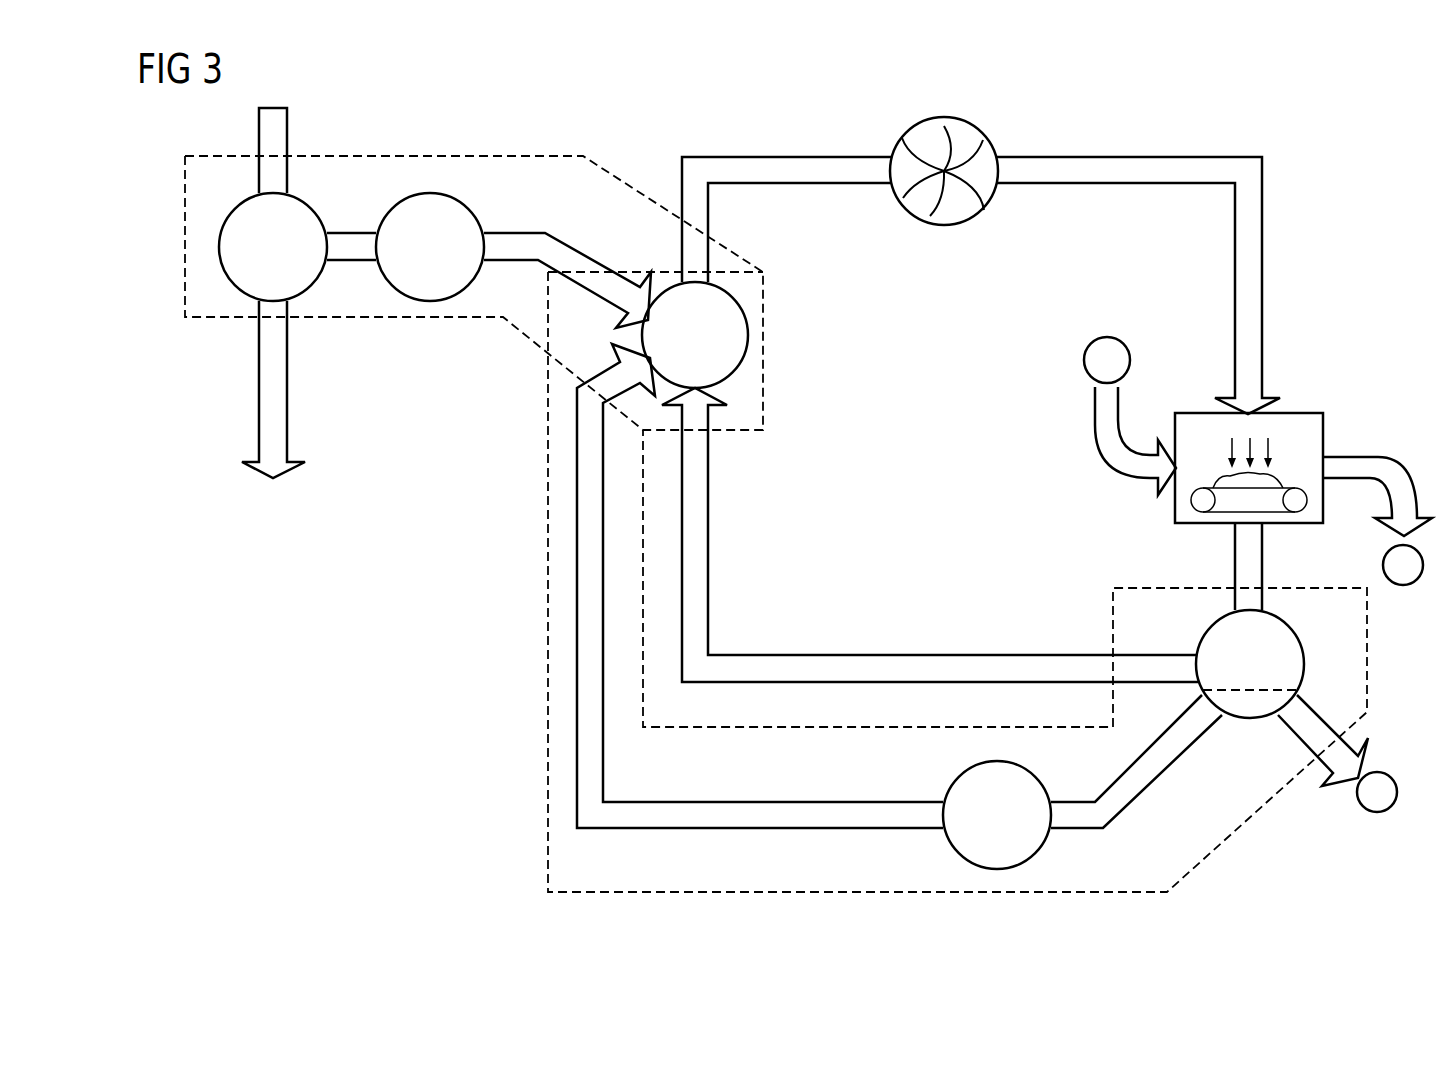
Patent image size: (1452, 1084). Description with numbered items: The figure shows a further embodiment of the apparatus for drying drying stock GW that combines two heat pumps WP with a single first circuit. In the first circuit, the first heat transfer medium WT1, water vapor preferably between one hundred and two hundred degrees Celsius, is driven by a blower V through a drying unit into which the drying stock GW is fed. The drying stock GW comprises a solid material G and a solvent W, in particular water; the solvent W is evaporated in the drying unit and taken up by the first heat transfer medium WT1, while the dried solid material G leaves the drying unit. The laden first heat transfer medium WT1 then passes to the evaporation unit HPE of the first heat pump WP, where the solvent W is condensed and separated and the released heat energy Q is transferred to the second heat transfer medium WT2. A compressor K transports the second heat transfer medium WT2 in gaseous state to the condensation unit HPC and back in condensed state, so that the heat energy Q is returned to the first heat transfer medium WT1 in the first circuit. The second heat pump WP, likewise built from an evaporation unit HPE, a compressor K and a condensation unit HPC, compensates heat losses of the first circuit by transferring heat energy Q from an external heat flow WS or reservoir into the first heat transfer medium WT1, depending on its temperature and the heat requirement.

The evaporation unit HPE is at (788, 455).
The compressor K is at (713, 531).
The heat energy Q is at (620, 252).
The condensation unit HPC is at (738, 333).
The heat flow WS is at (268, 400).
The heat pump WP is at (433, 328).
The blower V is at (975, 110).
The first heat transfer medium WT1 is at (1102, 168).
The drying stock GW is at (1130, 416).
The solid material G is at (1377, 521).
The solvent W is at (1337, 753).
The second heat transfer medium WT2 is at (1084, 826).